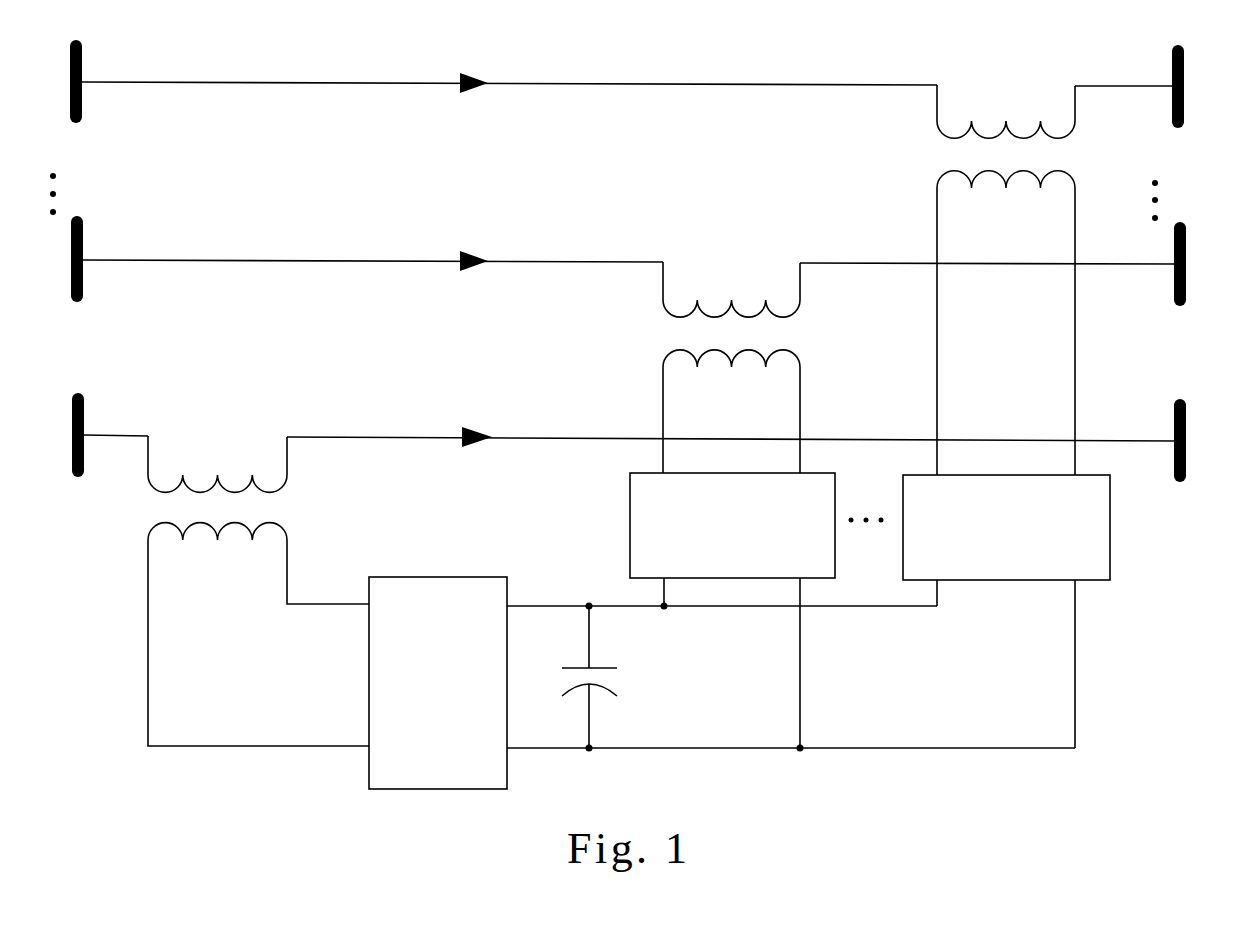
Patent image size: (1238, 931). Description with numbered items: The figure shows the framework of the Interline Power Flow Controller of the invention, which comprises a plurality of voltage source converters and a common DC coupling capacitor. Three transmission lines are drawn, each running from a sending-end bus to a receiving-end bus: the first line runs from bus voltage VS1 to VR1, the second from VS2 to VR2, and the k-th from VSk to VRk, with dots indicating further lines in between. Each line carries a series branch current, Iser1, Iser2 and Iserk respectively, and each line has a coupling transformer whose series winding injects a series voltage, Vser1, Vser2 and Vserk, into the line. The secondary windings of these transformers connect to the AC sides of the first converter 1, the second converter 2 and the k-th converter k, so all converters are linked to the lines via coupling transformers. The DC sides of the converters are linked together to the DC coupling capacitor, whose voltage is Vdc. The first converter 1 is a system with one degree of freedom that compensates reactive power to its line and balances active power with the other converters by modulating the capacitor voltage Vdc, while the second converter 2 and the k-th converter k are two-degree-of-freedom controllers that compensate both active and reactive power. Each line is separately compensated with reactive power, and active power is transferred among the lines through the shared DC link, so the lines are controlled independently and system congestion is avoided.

The VSC1 1 is at (438, 683).
The VSC2 2 is at (732, 610).
The VSCk k is at (1006, 611).
The DC coupling capacitor voltage Vdc is at (683, 677).
The sending-end bus voltage of line k VSk is at (77, 110).
The sending-end bus voltage of line 2 VS2 is at (79, 289).
The sending-end bus voltage of line 1 VS1 is at (83, 465).
The receiving-end bus voltage of line k VRk is at (1178, 115).
The receiving-end bus voltage of line 2 VR2 is at (1178, 294).
The receiving-end bus voltage of line 1 VR1 is at (1180, 471).
The series branch current of line k Iserk is at (627, 61).
The series branch current of line 2 Iser2 is at (629, 238).
The series branch current of line 1 Iser1 is at (629, 414).
The series injected voltage of line k Vserk is at (1006, 90).
The series injected voltage of line 2 Vser2 is at (739, 266).
The series injected voltage of line 1 Vser1 is at (223, 441).